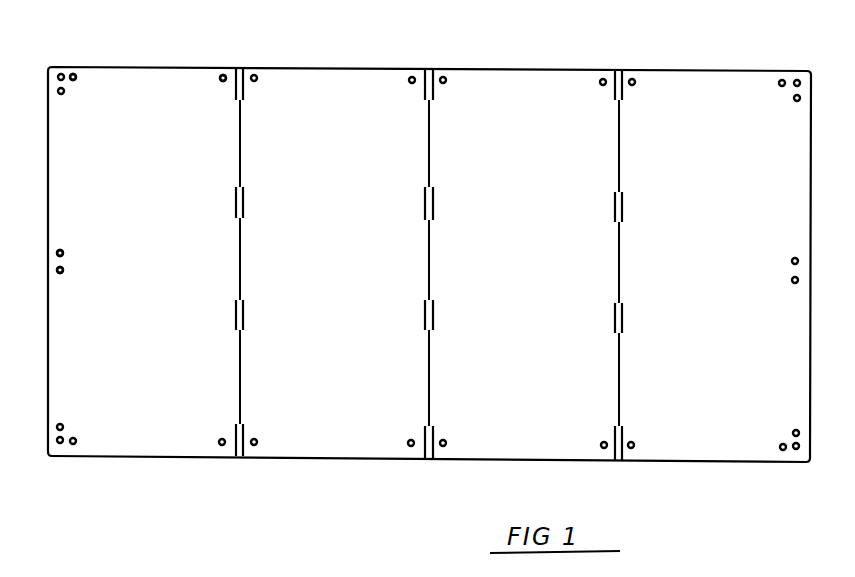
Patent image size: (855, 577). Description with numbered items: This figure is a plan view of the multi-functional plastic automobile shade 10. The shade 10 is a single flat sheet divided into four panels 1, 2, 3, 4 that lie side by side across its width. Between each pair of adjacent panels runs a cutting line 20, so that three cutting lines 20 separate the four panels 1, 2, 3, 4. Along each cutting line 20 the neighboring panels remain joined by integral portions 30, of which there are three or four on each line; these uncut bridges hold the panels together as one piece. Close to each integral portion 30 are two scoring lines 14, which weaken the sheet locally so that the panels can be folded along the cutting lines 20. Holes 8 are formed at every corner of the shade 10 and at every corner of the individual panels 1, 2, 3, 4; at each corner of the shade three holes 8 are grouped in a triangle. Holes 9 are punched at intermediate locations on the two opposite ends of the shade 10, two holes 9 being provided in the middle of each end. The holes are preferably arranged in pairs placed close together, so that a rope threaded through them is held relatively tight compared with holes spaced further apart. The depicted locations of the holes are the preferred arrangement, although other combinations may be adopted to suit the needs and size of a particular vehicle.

The panel 1 is at (164, 432).
The panel 2 is at (350, 440).
The panel 3 is at (540, 442).
The panel 4 is at (735, 446).
The holes 8 is at (223, 74).
The holes 9 is at (62, 270).
The shade 10 is at (482, 68).
The scoring lines 14 is at (425, 208).
The cutting lines 20 is at (431, 150).
The integral portions 30 is at (425, 318).